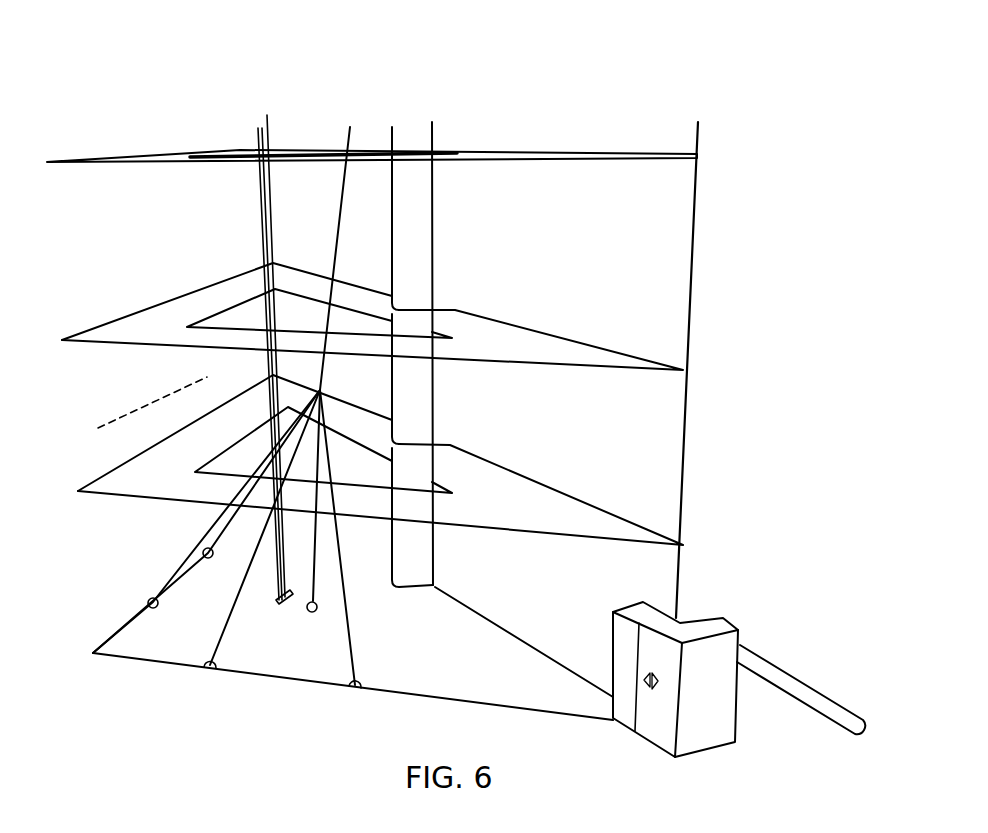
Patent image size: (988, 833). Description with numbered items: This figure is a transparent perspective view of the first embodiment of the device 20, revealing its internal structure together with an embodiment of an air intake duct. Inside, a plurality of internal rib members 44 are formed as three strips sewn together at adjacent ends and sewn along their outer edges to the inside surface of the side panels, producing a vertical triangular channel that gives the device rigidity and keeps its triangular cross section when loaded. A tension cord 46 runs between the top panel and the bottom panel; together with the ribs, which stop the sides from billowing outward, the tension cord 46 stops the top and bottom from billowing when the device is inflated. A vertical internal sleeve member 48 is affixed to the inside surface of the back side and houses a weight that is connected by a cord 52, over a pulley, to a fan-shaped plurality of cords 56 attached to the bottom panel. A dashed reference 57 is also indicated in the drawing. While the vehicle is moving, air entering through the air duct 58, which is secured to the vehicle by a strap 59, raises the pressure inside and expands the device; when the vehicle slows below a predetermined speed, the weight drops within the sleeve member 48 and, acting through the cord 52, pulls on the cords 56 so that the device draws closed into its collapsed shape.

The tower structure 20 is at (618, 86).
The internal rib members 44 is at (498, 338).
The tension cord 46 is at (258, 130).
The internal sleeve member 48 is at (422, 137).
The cord 52 is at (350, 130).
The fan-shaped plurality of cords 56 is at (218, 633).
The axis 57 is at (125, 416).
The air duct 58 is at (627, 706).
The strap 59 is at (762, 662).